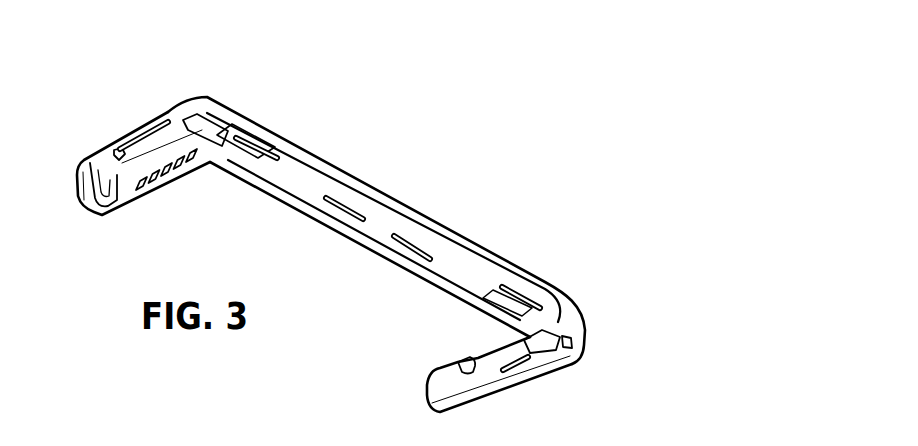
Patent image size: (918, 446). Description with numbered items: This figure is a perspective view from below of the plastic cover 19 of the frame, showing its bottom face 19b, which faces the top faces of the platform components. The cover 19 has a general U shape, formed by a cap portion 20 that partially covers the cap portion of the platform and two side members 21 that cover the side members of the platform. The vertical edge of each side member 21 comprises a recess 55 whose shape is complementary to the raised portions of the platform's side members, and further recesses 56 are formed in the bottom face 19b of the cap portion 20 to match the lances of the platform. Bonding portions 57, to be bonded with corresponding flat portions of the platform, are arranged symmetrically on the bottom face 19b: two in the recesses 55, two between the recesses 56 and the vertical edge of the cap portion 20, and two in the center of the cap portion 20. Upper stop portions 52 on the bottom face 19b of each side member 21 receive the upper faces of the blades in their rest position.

The cover 19 is at (415, 152).
The bottom face 19b is at (302, 180).
The cap portion 20 is at (372, 236).
The side members 21 is at (143, 100).
The upper stop portions 52 is at (180, 172).
The recess 55 is at (118, 149).
The recesses 56 is at (243, 152).
The bonding portions 57 is at (138, 135).